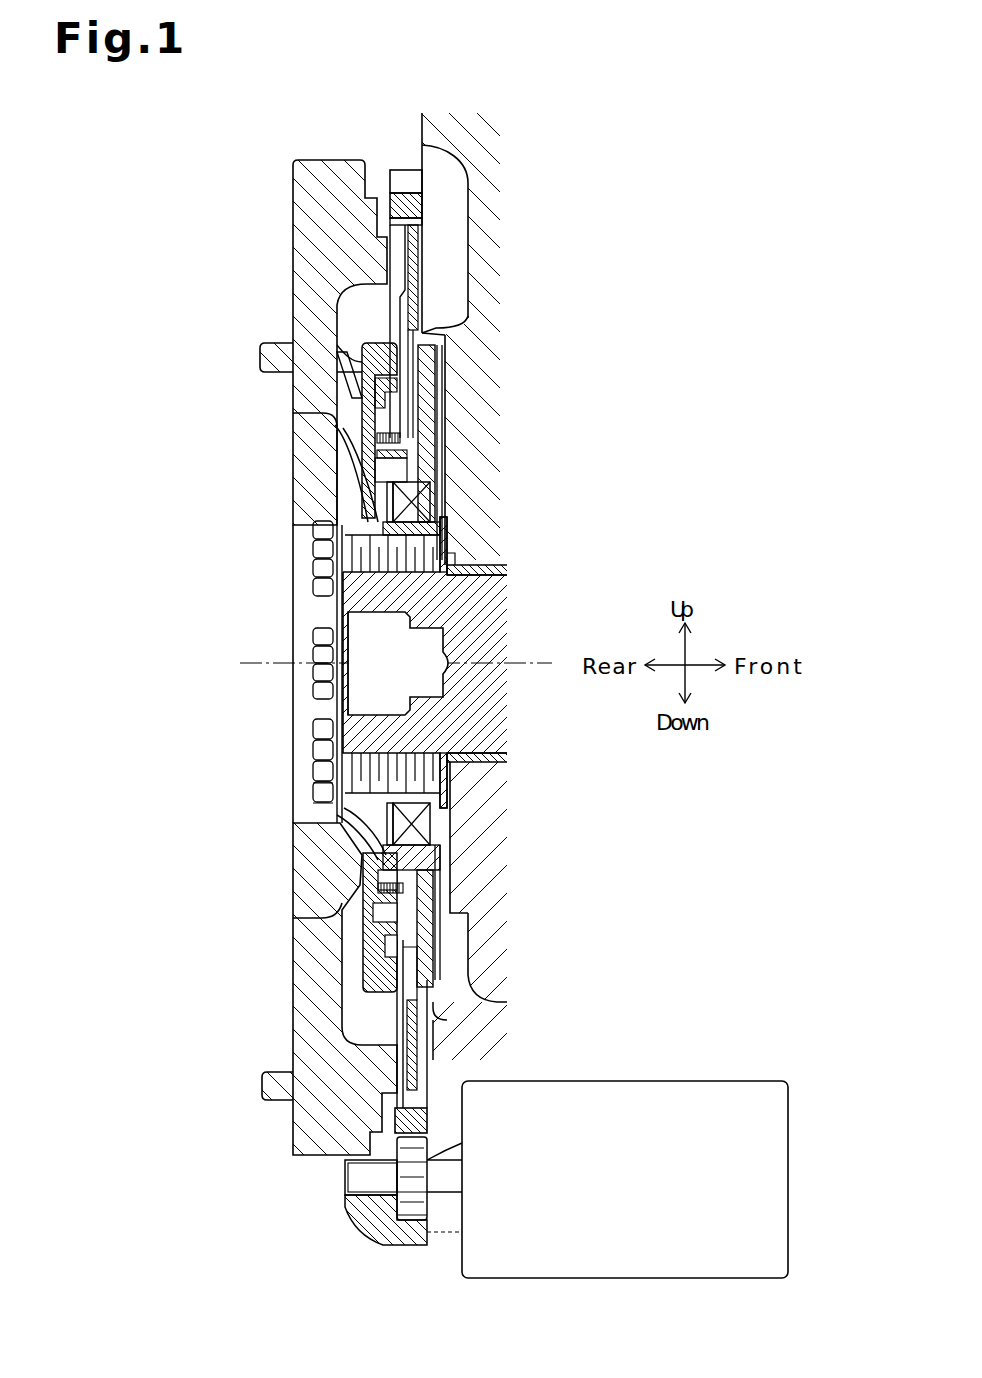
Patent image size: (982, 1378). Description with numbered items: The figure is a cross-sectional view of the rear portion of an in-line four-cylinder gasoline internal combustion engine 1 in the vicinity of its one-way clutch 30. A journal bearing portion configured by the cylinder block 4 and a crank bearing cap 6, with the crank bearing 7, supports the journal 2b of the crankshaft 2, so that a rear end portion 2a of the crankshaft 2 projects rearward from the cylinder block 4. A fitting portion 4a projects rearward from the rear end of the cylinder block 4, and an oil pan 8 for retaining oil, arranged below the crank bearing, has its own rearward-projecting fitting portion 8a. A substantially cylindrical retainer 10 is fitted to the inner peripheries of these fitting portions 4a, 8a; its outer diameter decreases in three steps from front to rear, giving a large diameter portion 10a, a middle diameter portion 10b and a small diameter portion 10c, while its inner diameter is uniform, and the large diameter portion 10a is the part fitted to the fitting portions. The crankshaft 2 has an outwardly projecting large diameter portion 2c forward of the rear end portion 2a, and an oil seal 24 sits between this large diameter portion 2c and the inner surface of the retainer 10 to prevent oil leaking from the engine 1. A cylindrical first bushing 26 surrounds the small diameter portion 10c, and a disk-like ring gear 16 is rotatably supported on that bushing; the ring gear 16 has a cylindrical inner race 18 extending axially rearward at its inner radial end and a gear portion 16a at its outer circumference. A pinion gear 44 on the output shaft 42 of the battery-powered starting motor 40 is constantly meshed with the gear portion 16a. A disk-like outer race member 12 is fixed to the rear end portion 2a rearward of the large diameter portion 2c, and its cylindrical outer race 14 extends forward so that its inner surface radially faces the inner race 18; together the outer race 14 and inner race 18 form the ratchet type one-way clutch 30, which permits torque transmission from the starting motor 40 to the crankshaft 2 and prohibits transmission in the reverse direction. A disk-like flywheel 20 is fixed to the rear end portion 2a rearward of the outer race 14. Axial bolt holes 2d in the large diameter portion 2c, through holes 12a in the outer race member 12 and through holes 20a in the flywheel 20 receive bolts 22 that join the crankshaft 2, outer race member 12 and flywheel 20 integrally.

The internal combustion engine 1 is at (578, 87).
The crankshaft 2 is at (487, 607).
The rear end portion 2a is at (347, 617).
The journal 2b is at (455, 553).
The large diameter portion 2c is at (447, 517).
The bolt hole 2d is at (447, 768).
The cylinder block 4 is at (468, 128).
The fitting portion 4a is at (440, 330).
The crank bearing cap 6 is at (480, 873).
The crank bearing 7 is at (470, 570).
The oil pan 8 is at (484, 1005).
The fitting portion 8a is at (455, 1016).
The retainer 10 is at (565, 385).
The large diameter portion 10a is at (425, 387).
The middle diameter portion 10b is at (418, 443).
The small diameter portion 10c is at (390, 468).
The outer race member 12 is at (368, 508).
The through hole 12a is at (372, 808).
The outer race 14 is at (330, 323).
The ring gear 16 is at (418, 244).
The gear portion 16a is at (400, 175).
The inner race 18 is at (337, 393).
The flywheel 20 is at (300, 232).
The through hole 20a is at (320, 785).
The bolt 22 is at (313, 570).
The oil seal 24 is at (385, 470).
The first bushing 26 is at (377, 438).
The one-way clutch 30 is at (348, 373).
The starting motor 40 is at (572, 1079).
The output shaft 42 is at (443, 1180).
The pinion gear 44 is at (407, 1213).